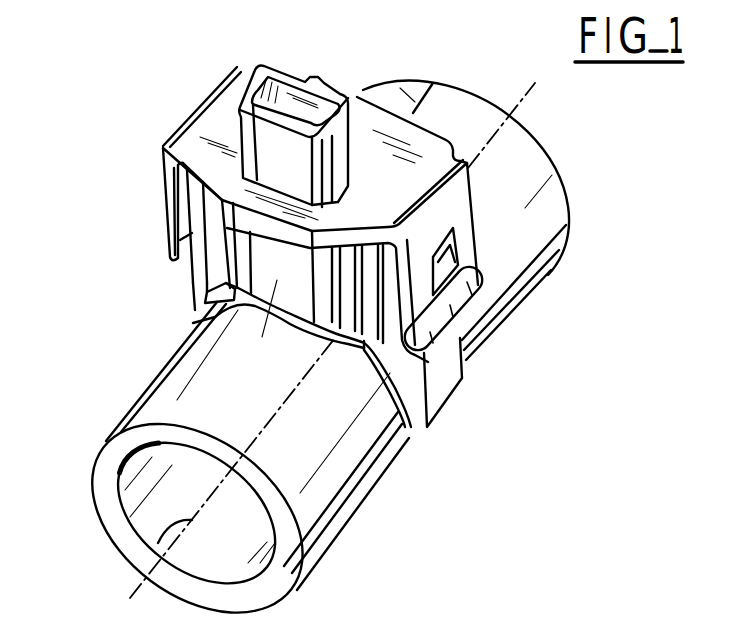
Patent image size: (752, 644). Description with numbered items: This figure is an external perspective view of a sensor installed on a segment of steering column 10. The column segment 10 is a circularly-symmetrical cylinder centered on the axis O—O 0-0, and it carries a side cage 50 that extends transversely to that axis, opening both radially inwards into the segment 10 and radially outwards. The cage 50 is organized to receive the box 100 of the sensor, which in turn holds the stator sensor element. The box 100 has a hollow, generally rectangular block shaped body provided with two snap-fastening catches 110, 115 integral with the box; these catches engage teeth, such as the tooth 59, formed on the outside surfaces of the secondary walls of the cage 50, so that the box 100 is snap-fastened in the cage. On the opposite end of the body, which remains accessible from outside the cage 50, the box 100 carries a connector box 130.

The box 100 is at (181, 114).
The snap-fastening catch 110 is at (165, 193).
The connector box 130 is at (348, 96).
The snap-fastening catch 115 is at (469, 236).
The tooth 59 is at (475, 347).
The side cage 50 is at (195, 322).
The steering column segment 10 is at (322, 515).
The axis 0-0 is at (152, 545).